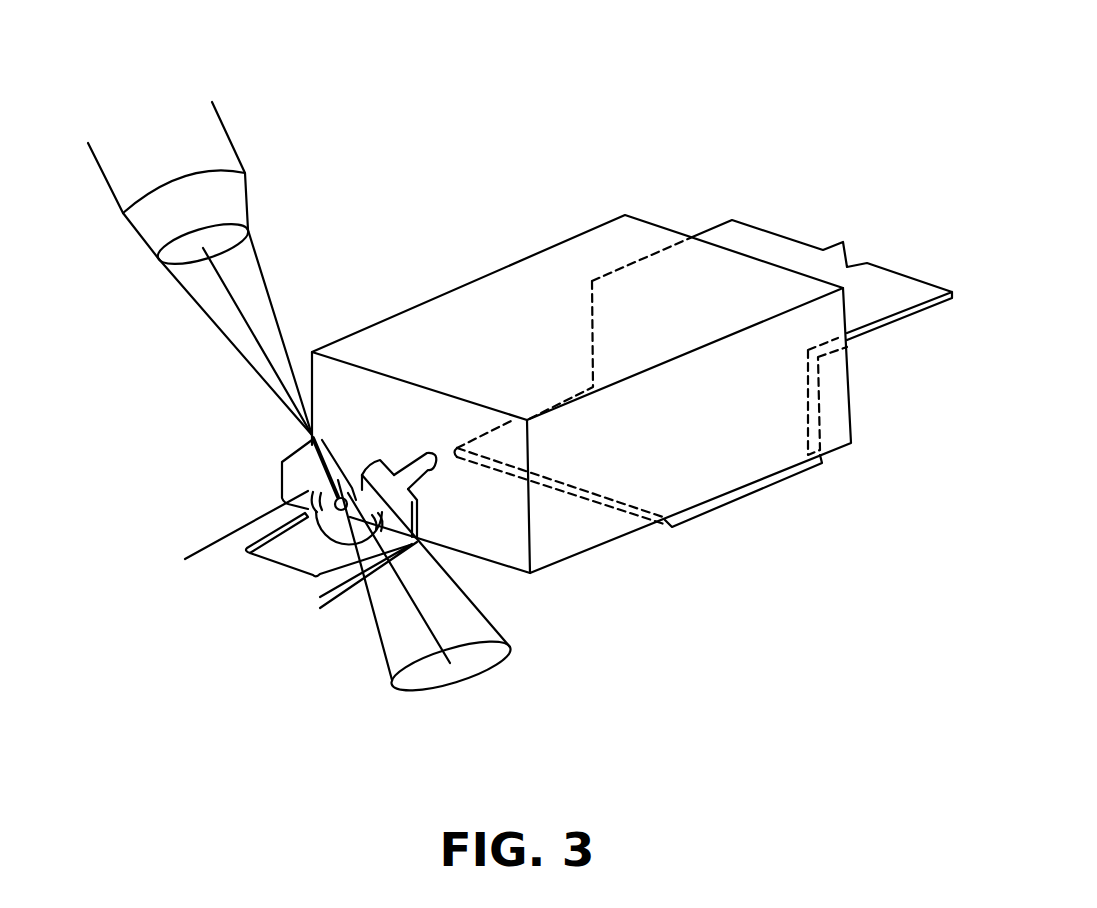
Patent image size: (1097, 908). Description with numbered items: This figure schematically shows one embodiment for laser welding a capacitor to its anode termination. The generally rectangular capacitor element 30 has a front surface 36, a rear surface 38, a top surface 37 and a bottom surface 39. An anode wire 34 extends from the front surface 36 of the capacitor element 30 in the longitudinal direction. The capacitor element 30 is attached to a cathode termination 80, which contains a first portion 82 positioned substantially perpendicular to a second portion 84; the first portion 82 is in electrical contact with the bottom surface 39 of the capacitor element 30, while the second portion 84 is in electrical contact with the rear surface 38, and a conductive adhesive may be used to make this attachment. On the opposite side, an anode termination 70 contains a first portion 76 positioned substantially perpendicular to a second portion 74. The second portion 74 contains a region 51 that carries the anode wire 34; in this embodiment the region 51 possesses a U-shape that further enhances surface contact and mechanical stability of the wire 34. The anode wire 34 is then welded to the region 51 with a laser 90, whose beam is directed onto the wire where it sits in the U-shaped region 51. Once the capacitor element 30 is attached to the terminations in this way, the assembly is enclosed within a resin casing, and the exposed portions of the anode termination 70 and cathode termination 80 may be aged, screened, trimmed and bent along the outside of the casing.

The capacitor element 30 is at (581, 394).
The anode wire 34 is at (412, 468).
The front surface 36 is at (493, 530).
The top surface 37 is at (433, 328).
The rear surface 38 is at (663, 222).
The bottom surface 39 is at (602, 547).
The region 51 is at (290, 513).
The anode termination 70 is at (250, 588).
The second portion 74 is at (293, 477).
The first portion 76 is at (338, 598).
The cathode termination 80 is at (798, 242).
The first portion 82 is at (757, 492).
The second portion 84 is at (813, 398).
The laser 90 is at (170, 118).